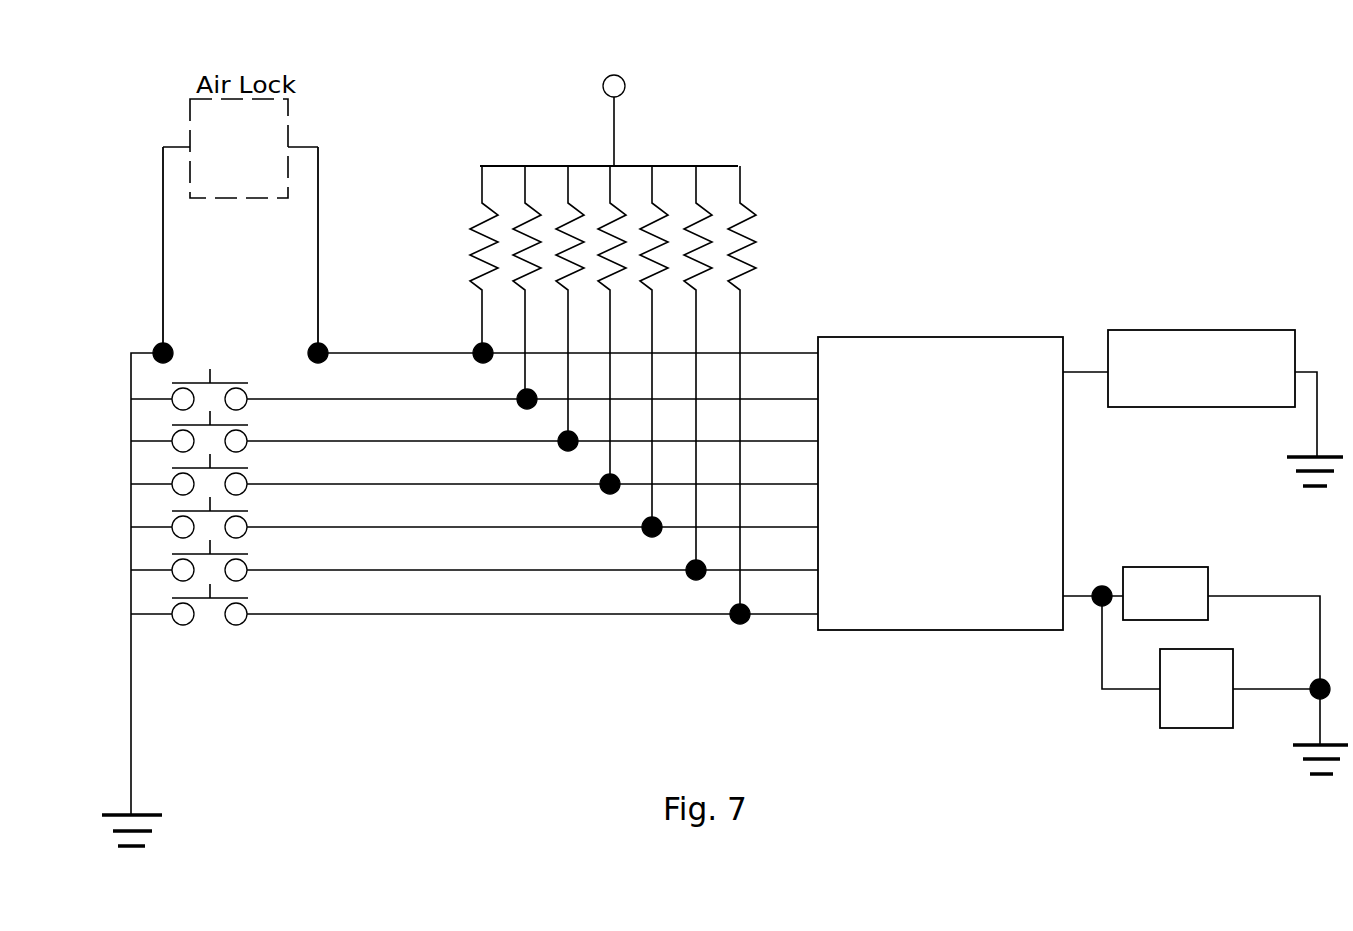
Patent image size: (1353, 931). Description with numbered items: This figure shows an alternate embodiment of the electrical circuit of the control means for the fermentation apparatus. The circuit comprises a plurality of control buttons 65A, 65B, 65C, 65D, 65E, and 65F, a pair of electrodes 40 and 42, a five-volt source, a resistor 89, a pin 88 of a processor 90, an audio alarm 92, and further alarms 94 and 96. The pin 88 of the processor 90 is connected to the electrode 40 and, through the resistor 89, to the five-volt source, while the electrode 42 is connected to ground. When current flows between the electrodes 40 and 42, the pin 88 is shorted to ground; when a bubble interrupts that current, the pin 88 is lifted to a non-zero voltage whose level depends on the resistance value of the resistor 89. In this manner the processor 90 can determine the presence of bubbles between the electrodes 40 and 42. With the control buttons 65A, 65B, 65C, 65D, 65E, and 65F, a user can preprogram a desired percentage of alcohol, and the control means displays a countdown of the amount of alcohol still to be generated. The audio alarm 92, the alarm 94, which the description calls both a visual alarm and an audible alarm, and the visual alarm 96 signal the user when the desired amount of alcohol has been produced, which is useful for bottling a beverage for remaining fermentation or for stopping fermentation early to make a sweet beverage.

The electrode 40 is at (318, 236).
The electrode 42 is at (163, 242).
The control button 65A is at (194, 380).
The control button 65B is at (194, 422).
The control button 65C is at (194, 465).
The control button 65D is at (194, 508).
The control button 65E is at (194, 551).
The control button 65F is at (194, 595).
The pin 88 is at (771, 352).
The resistor 89 is at (472, 255).
The processor 90 is at (985, 360).
The audio alarm 92 is at (1173, 343).
The visual alarm 94 is at (1173, 720).
The visual alarm 96 is at (1148, 577).